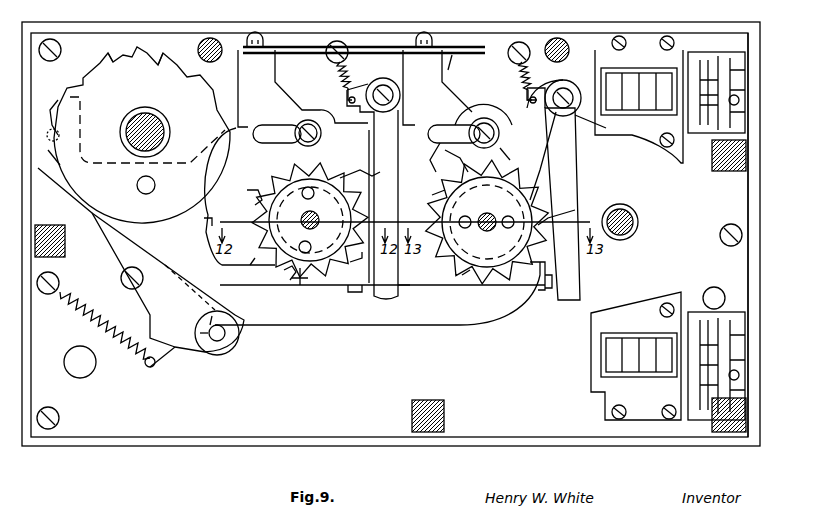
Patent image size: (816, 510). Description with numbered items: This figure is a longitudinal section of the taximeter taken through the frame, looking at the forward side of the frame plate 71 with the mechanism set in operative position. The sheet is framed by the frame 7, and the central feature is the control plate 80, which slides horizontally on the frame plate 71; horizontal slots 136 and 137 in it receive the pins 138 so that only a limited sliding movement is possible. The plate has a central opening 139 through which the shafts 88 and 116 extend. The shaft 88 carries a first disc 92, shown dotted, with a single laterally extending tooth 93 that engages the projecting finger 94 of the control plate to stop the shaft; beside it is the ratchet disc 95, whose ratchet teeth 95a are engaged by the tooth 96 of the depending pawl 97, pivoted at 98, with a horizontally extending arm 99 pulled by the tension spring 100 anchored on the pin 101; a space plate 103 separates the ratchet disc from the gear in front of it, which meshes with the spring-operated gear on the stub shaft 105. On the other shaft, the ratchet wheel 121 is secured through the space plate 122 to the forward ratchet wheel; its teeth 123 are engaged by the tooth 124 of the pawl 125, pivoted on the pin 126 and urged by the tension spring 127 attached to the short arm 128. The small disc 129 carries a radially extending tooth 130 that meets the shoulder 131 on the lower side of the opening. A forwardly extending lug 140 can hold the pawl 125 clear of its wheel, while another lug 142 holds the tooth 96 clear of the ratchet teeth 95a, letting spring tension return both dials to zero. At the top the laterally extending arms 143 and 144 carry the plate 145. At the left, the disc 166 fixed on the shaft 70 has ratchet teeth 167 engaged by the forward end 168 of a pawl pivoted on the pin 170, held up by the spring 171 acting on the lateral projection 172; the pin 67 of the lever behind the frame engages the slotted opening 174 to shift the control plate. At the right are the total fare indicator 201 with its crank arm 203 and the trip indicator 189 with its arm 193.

The frame 7 is at (222, 446).
The frame plate 71 is at (750, 196).
The shaft 70 is at (168, 124).
The disc 166 is at (115, 60).
The ratchet teeth 167 is at (170, 55).
The slotted opening 174 is at (55, 105).
The pin 67 is at (50, 145).
The forward end of pawl 168 is at (88, 228).
The pin 170 is at (240, 343).
The spring 171 is at (108, 318).
The lateral projection 172 is at (152, 368).
The control plate 80 is at (238, 92).
The laterally extending arm 144 is at (258, 58).
The pin 101 is at (488, 46).
The horizontal slot 136 is at (228, 140).
The central opening 139 is at (206, 230).
The space plate 122 is at (250, 195).
The small disc 129 is at (258, 255).
The shaft 116 is at (314, 216).
The shaft 88 is at (490, 230).
The pin 126 is at (390, 78).
The teeth 123 is at (375, 191).
The tension spring 127 is at (338, 78).
The short arm 128 is at (346, 98).
The pins 138 is at (322, 133).
The ratchet wheel 121 is at (360, 165).
The tooth 124 is at (364, 265).
The forwardly extending lug 140 is at (352, 292).
The pawl 125 is at (402, 290).
The radially extending tooth 130 is at (302, 286).
The shoulder 131 is at (288, 282).
The forwardly extending lug 142 is at (542, 300).
The space plate 103 is at (462, 280).
The laterally extending arm 143 is at (437, 87).
The plate 145 is at (452, 62).
The horizontal slot 137 is at (482, 115).
The tension spring 100 is at (524, 96).
The projecting finger 94 is at (436, 160).
The laterally extending tooth 93 is at (456, 158).
The disc 92 is at (432, 195).
The horizontally extending arm 99 is at (566, 84).
The depending pawl 97 is at (579, 170).
The pivot 98 is at (596, 123).
The ratchet disc 95 is at (560, 186).
The ratchet teeth 95a is at (519, 151).
The tooth 96 is at (578, 212).
The stub shaft 105 is at (640, 214).
The total fare indicator 201 is at (635, 68).
The crank arm 203 is at (738, 56).
The trip indicator 189 is at (630, 333).
The arm 193 is at (748, 340).